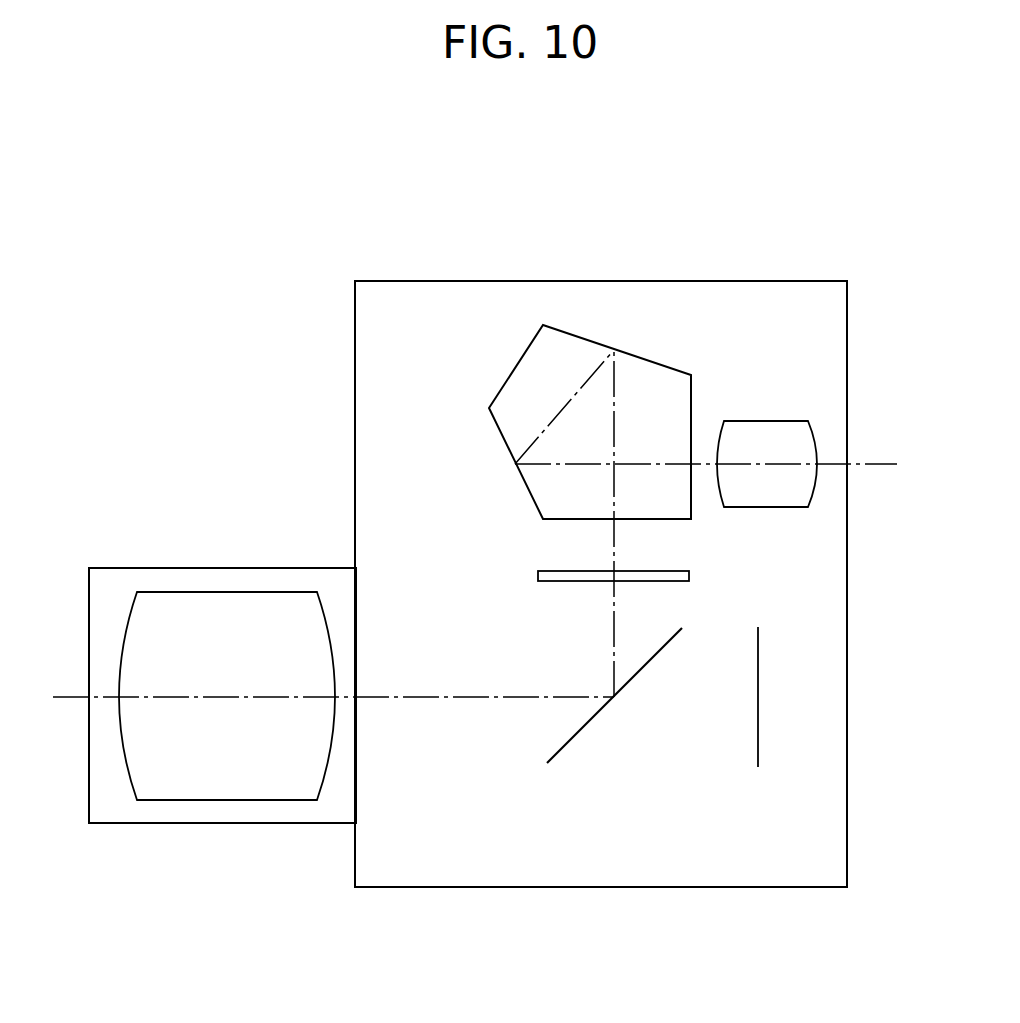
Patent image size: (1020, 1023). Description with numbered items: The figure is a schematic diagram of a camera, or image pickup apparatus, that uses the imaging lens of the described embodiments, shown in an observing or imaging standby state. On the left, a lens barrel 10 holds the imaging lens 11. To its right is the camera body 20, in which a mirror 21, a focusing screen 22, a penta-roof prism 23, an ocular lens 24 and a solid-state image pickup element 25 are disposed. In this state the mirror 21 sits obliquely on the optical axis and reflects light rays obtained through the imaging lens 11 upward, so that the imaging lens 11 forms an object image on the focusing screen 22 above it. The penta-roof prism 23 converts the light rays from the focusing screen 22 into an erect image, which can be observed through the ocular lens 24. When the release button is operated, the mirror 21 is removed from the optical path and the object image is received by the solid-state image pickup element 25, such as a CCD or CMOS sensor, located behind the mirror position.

The lens barrel 10 is at (215, 823).
The imaging lens 11 is at (214, 602).
The camera body 20 is at (672, 281).
The mirror 21 is at (582, 731).
The focusing screen 22 is at (682, 575).
The penta-roof prism 23 is at (587, 352).
The ocular lens 24 is at (757, 435).
The solid-state image pickup element 25 is at (758, 712).